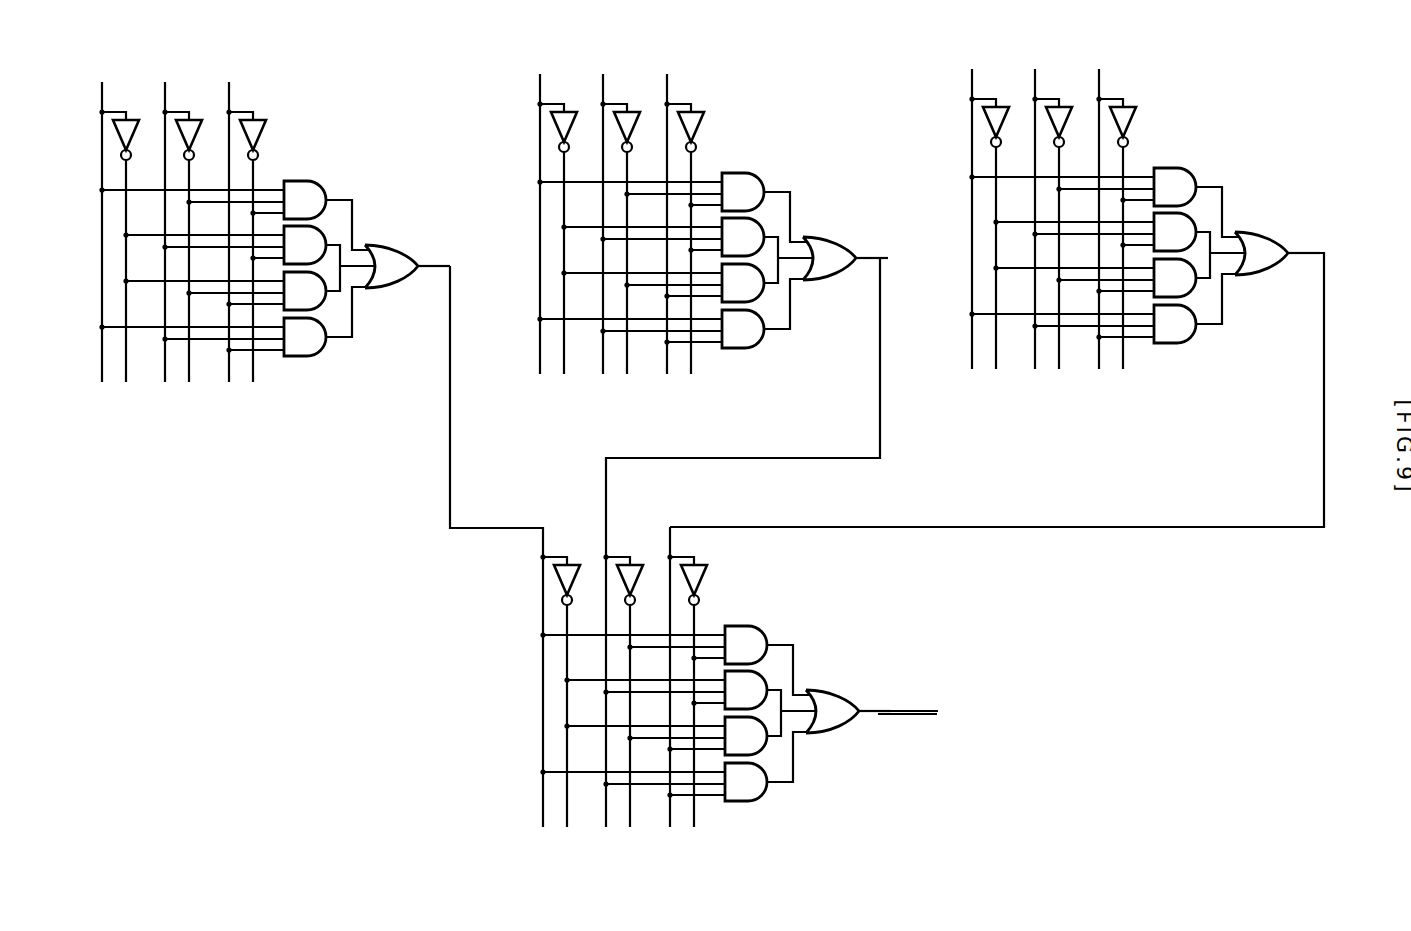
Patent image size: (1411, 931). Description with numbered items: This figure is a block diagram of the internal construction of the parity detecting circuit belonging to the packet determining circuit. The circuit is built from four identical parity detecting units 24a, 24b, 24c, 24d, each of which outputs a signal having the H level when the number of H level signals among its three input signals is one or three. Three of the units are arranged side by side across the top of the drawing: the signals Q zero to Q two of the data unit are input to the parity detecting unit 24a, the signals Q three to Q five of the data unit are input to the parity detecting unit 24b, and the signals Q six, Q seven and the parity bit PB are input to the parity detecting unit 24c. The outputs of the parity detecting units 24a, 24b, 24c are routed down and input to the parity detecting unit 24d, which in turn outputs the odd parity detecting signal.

The parity detecting unit 24a is at (1178, 101).
The parity detecting unit 24b is at (740, 106).
The parity detecting unit 24c is at (306, 113).
The parity detecting unit 24d is at (761, 607).